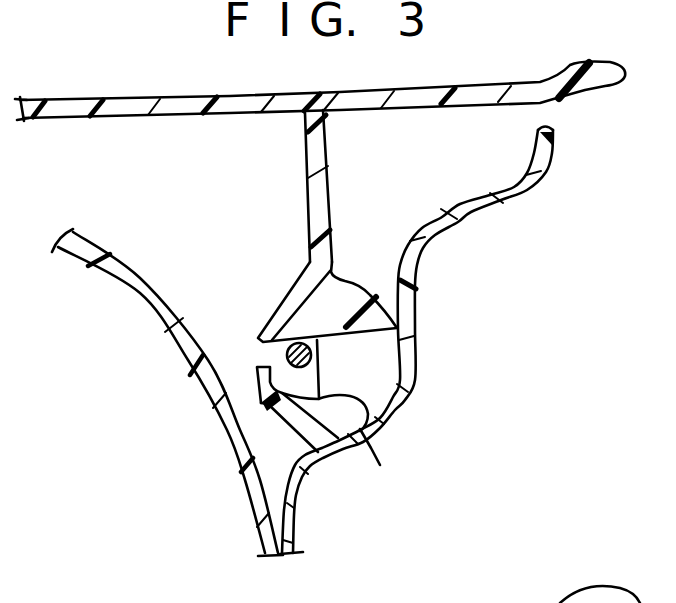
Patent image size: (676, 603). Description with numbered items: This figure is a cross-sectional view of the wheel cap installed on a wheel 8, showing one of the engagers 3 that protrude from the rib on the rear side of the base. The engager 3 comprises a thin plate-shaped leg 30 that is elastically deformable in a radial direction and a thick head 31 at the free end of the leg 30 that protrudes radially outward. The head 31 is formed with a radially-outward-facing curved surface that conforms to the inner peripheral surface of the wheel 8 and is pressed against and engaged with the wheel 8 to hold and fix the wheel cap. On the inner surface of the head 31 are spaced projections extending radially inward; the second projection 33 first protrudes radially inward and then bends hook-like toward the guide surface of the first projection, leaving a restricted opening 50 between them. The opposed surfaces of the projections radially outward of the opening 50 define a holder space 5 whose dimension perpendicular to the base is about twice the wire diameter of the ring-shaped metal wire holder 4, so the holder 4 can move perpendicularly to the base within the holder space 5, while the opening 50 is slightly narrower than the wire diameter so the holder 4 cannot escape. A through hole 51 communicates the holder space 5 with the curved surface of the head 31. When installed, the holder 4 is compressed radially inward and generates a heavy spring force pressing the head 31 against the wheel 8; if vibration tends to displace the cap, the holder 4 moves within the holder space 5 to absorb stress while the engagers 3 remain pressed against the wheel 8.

The engager 3 is at (266, 268).
The leg 30 is at (302, 150).
The head 31 is at (322, 427).
The second projection 33 is at (265, 406).
The holder 4 is at (313, 351).
The holder space 5 is at (398, 507).
The opening 50 is at (265, 353).
The through hole 51 is at (367, 363).
The wheel 8 is at (513, 192).